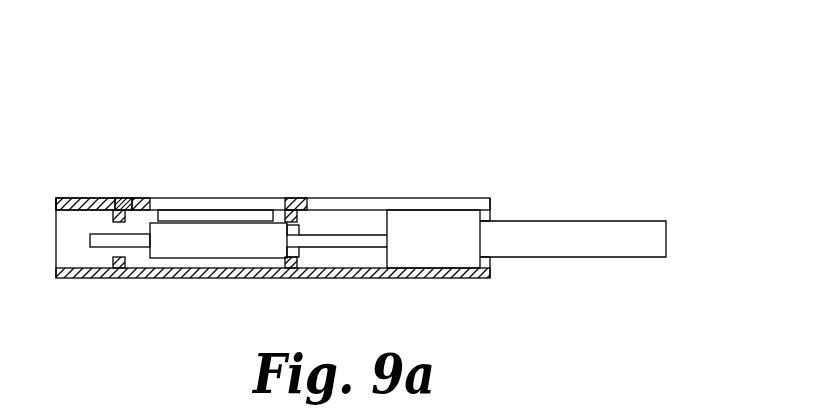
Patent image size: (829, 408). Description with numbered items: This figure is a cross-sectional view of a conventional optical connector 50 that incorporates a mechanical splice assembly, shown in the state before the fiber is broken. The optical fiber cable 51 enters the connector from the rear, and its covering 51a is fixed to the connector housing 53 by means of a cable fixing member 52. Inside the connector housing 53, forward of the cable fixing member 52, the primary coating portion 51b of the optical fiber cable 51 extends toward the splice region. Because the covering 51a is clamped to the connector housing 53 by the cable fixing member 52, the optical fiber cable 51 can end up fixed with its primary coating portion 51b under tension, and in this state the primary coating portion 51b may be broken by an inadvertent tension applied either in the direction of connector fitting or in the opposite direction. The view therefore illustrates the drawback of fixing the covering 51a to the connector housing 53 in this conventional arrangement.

The optical connector 50 is at (548, 119).
The optical fiber cable 51 is at (573, 234).
The covering 51a is at (575, 243).
The primary coating portion 51b is at (347, 236).
The cable fixing member 52 is at (447, 235).
The connector housing 53 is at (122, 198).